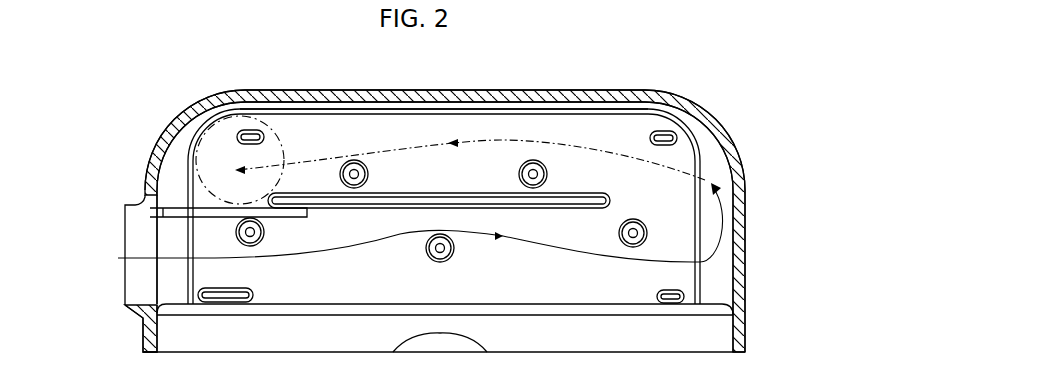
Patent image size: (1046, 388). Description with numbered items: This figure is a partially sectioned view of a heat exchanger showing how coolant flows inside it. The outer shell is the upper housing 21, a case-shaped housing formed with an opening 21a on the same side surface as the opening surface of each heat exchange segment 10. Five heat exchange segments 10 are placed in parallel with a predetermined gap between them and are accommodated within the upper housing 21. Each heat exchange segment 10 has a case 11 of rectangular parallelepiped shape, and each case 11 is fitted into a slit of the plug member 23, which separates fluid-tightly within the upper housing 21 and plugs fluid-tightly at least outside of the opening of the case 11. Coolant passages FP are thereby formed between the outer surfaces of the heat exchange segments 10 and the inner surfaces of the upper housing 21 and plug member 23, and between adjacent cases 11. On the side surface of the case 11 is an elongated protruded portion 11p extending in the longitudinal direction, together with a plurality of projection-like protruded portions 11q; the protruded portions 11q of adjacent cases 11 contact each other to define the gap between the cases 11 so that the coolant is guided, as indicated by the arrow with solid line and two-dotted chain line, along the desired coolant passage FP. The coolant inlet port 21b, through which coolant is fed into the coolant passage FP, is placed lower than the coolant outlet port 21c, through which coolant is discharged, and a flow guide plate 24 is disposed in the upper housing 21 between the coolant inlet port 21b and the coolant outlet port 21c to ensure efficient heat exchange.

The heat exchange segment 10 is at (594, 111).
The case 11 is at (690, 135).
The protruded portion 11p is at (284, 203).
The protruded portion 11q is at (437, 253).
The upper housing 21 is at (742, 252).
The opening 21a is at (148, 352).
The coolant inlet port 21b is at (142, 305).
The coolant outlet port 21c is at (282, 147).
The plug member 23 is at (717, 336).
The flow guide plate 24 is at (178, 212).
The coolant passage FP is at (718, 173).